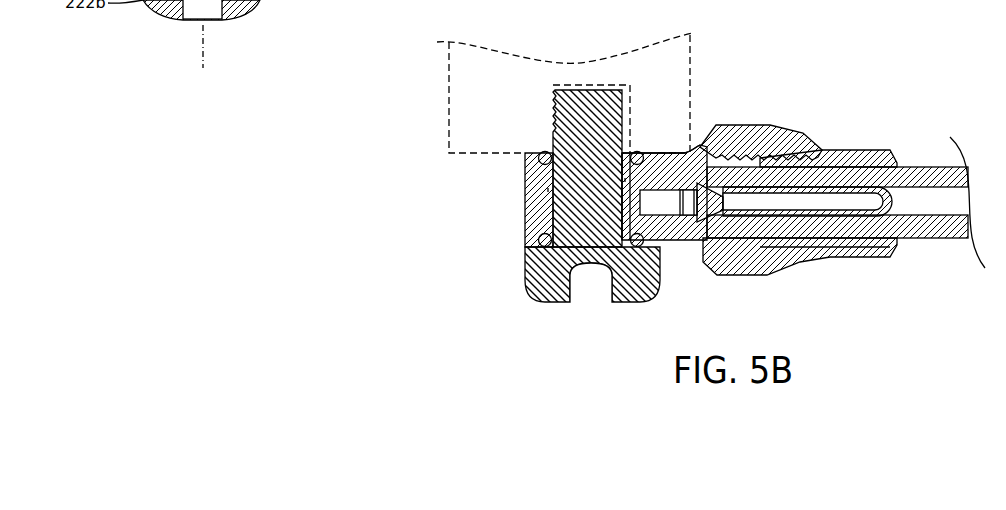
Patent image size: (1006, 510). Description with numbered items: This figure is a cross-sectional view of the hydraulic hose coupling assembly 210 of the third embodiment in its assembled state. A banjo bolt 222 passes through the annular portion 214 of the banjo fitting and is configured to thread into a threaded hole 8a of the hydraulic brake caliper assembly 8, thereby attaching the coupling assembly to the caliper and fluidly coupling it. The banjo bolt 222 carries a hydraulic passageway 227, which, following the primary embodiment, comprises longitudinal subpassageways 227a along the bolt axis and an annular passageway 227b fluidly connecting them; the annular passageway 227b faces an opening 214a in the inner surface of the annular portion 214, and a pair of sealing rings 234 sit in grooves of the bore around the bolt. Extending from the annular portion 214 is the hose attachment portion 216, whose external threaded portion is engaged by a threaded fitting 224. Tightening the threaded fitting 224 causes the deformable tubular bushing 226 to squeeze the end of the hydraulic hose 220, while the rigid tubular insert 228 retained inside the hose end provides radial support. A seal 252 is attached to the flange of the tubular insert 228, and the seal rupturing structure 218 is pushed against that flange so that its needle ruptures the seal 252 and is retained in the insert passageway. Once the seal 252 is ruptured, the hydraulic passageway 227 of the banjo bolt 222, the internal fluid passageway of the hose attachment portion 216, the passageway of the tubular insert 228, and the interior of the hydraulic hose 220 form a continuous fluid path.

The hydraulic brake caliper assembly 8 is at (690, 58).
The threaded hole 8a is at (632, 102).
The hydraulic hose coupling assembly 210 is at (920, 82).
The valve body 214 is at (523, 232).
The body recess 214a is at (652, 250).
The hose attachment portion 216 is at (687, 243).
The seal rupturing structure 218 is at (673, 165).
The hydraulic hose 220 is at (925, 166).
The banjo bolt 222 is at (552, 118).
The threaded fitting 224 is at (763, 124).
The deformable tubular bushing 226 is at (816, 150).
The hydraulic passageway 227 is at (456, 228).
The first seal surface 227a is at (627, 180).
The second seal surface 227b is at (548, 190).
The tubular insert 228 is at (815, 258).
The o-ring seals 234 is at (538, 153).
The seal 252 is at (728, 212).